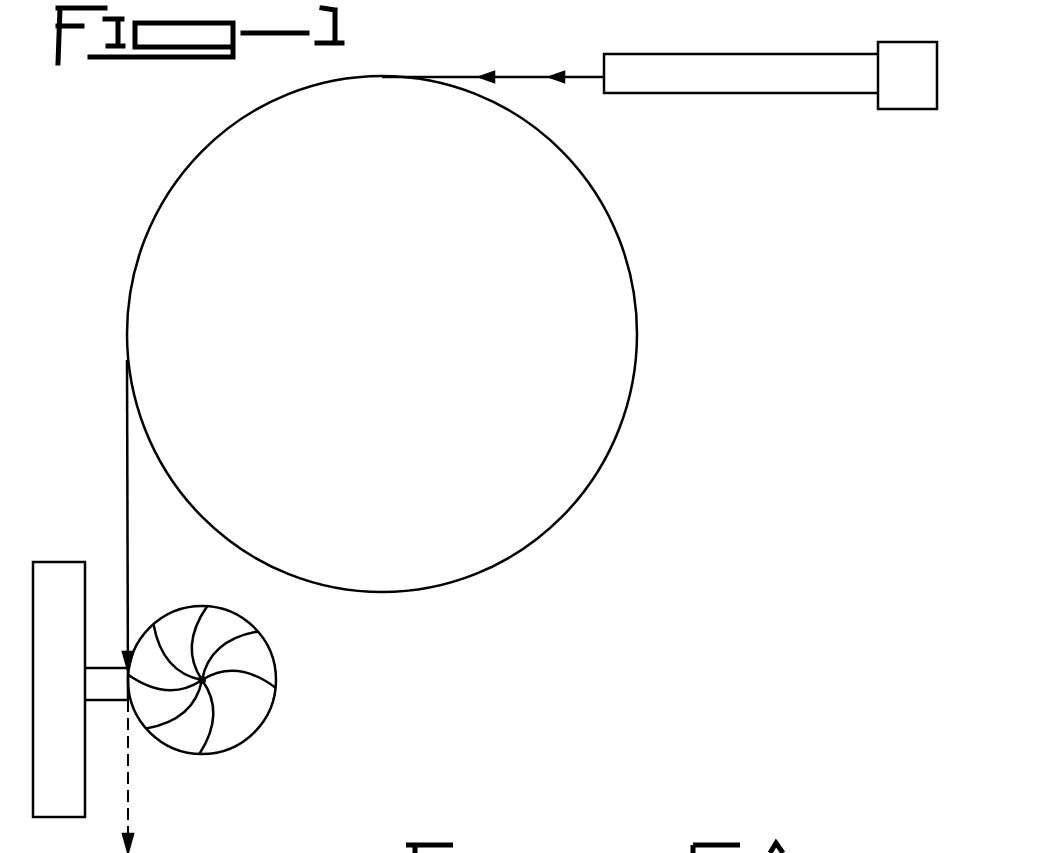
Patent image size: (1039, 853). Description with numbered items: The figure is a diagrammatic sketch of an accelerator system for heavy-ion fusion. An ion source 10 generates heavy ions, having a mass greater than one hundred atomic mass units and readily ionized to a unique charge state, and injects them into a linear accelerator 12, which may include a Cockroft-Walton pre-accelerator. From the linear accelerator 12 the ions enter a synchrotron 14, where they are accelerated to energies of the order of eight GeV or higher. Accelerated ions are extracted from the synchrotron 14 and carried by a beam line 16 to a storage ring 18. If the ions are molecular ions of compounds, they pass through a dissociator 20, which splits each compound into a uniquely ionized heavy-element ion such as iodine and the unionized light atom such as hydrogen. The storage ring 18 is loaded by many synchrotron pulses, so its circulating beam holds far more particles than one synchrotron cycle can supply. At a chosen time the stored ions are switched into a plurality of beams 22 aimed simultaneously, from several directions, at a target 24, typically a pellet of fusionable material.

The ion source 10 is at (913, 97).
The linear accelerator 12 is at (734, 80).
The synchrotron 14 is at (612, 222).
The beam line 16 is at (128, 483).
The storage ring 18 is at (273, 648).
The dissociator 20 is at (58, 563).
The plurality of beams 22 is at (240, 708).
The target 24 is at (206, 683).